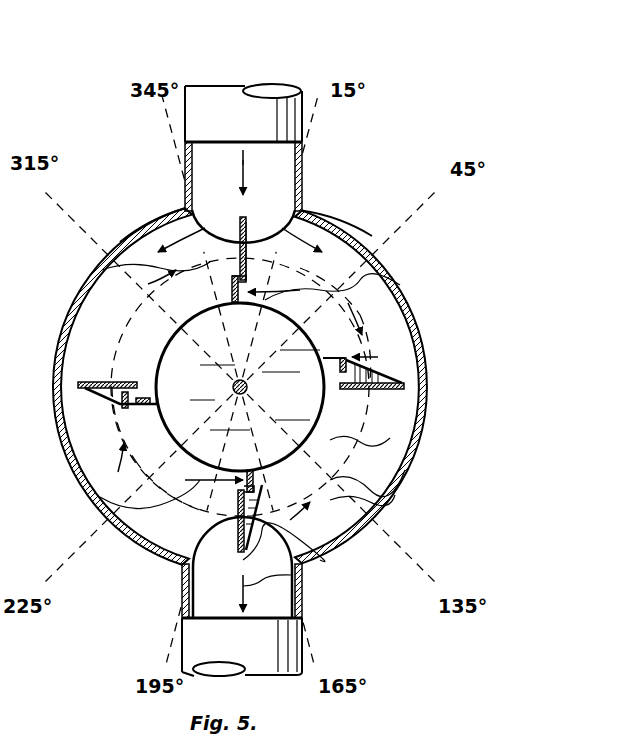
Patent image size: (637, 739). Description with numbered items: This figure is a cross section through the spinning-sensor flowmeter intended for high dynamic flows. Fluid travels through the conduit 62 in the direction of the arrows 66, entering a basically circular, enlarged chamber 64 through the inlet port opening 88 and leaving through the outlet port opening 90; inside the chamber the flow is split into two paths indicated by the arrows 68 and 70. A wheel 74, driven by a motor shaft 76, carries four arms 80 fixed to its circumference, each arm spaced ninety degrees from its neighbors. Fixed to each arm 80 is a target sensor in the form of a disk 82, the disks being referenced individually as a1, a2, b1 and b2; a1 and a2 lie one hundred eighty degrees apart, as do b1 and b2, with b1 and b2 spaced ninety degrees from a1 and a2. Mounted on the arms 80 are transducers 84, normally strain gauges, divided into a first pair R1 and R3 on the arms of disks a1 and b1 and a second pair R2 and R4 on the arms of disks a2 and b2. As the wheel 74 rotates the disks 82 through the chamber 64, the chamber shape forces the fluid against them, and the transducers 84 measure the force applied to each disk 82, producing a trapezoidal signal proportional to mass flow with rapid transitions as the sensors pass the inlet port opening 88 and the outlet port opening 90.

The conduit 62 is at (280, 86).
The circular chamber 64 is at (130, 548).
The arrows 66 is at (245, 163).
The arrows 68 is at (326, 230).
The arrows 70 is at (178, 217).
The wheel 74 is at (340, 480).
The motor shaft 76 is at (340, 460).
The arms 80 is at (102, 270).
The disk 82 is at (302, 188).
The transducers 84 is at (235, 270).
The inlet port opening 88 is at (195, 167).
The outlet port opening 90 is at (185, 594).
The transducer R1 is at (150, 407).
The transducer R2 is at (400, 292).
The transducer R3 is at (100, 497).
The transducer R4 is at (395, 350).
The disk a1 is at (117, 379).
The disk a2 is at (377, 387).
The disk b1 is at (238, 517).
The disk b2 is at (262, 252).